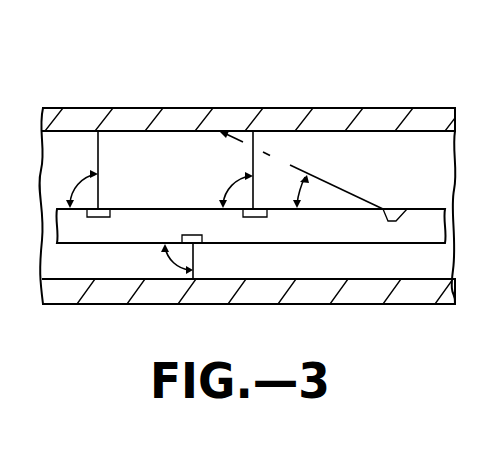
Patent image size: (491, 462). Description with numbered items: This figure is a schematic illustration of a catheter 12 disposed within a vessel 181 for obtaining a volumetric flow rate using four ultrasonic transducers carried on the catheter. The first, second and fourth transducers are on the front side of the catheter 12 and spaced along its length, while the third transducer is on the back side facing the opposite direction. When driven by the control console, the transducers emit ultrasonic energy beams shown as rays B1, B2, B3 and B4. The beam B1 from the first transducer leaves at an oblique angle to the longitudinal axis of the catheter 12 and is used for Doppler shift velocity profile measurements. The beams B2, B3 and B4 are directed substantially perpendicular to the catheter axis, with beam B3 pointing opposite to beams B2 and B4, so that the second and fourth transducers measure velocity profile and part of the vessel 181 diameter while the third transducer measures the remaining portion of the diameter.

The vessel 181 is at (174, 117).
The catheter 12 is at (427, 207).
The ultrasonic energy beam B1 is at (301, 170).
The ultrasonic beam B2 is at (272, 170).
The ultrasonic beam B3 is at (214, 261).
The ultrasonic beam B4 is at (117, 170).